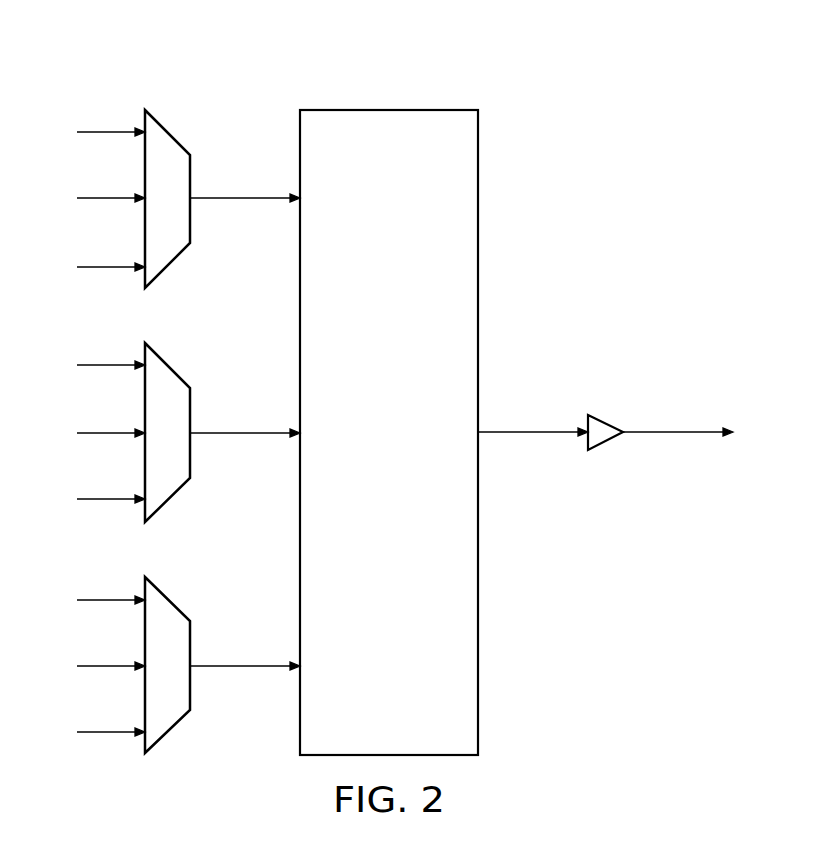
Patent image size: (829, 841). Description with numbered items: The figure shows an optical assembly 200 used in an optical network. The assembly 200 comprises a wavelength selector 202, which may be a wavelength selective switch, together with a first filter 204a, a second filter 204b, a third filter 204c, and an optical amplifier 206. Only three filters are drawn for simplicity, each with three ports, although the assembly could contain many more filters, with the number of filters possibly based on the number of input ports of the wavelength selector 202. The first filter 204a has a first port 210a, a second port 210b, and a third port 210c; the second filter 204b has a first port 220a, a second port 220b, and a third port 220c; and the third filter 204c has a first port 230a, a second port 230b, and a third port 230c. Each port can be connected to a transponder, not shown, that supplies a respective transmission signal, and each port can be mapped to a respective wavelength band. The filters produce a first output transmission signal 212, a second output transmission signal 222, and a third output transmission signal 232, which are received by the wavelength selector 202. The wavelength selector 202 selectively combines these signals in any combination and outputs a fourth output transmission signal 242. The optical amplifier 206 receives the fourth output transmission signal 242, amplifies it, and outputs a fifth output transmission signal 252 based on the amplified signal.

The optical assembly 200 is at (328, 58).
The wavelength selector 202 is at (368, 476).
The first filter 204a is at (193, 121).
The second filter 204b is at (172, 497).
The third filter 204c is at (172, 728).
The optical amplifier 206 is at (632, 405).
The first port 210a is at (113, 130).
The second port 210b is at (113, 196).
The third port 210c is at (113, 265).
The first output transmission signal 212 is at (245, 196).
The first port 220a is at (113, 363).
The second port 220b is at (113, 431).
The third port 220c is at (113, 502).
The second output transmission signal 222 is at (245, 431).
The first port 230a is at (113, 602).
The second port 230b is at (113, 668).
The third port 230c is at (113, 734).
The third output transmission signal 232 is at (245, 668).
The fourth output transmission signal 242 is at (533, 430).
The fifth output transmission signal 252 is at (678, 430).